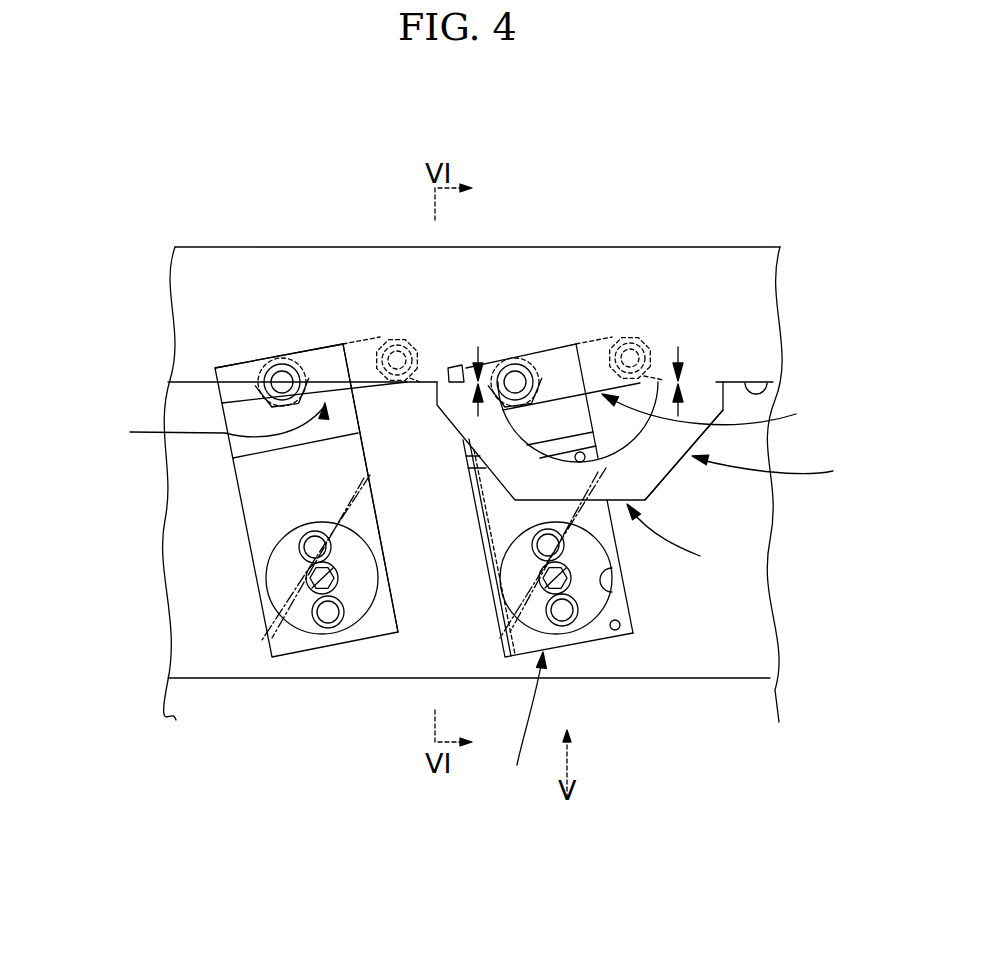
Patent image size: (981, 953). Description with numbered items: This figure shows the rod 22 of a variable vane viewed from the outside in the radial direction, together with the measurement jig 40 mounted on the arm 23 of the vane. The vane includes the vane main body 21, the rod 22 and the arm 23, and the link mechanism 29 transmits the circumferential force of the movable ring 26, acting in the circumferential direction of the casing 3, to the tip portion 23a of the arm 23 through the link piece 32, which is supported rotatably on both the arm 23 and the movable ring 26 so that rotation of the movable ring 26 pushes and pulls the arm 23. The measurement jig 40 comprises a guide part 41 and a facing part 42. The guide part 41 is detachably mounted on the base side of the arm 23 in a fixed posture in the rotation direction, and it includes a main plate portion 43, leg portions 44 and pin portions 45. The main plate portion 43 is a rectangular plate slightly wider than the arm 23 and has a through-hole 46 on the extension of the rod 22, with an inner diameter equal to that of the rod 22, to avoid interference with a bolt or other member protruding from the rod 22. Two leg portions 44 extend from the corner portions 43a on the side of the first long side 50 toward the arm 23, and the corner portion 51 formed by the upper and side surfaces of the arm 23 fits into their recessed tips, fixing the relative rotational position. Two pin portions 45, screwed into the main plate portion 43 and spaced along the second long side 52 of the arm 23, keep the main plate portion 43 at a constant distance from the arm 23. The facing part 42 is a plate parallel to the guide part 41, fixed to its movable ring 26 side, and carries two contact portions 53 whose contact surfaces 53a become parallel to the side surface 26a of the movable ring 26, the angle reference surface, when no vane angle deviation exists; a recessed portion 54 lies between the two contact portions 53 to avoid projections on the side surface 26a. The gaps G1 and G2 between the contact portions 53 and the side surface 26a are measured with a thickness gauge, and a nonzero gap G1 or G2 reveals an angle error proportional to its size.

The movable ring 26 is at (758, 257).
The side surface 26a is at (765, 396).
The casing 3 is at (753, 542).
The arm 23 is at (243, 500).
The tip portion 23a is at (227, 393).
The link mechanism 29 is at (461, 420).
The link piece 32 is at (370, 358).
The first long side 50 is at (243, 548).
The corner portion 51 is at (253, 587).
The vane main body 21 is at (285, 627).
The rod 22 is at (355, 603).
The second long side 52 is at (387, 567).
The contact portion 53 is at (466, 366).
The contact surface 53a is at (462, 380).
The recessed portion 54 is at (553, 408).
The gap G1 is at (665, 375).
The gap G2 is at (485, 370).
The measurement jig 40 is at (588, 482).
The facing part 42 is at (760, 455).
The pin portion 45 is at (590, 459).
The guide part 41 is at (548, 617).
The through-hole 46 is at (600, 585).
The main plate portion 43 is at (498, 528).
The leg portion 44 is at (463, 465).
The corner portion 43a is at (465, 482).